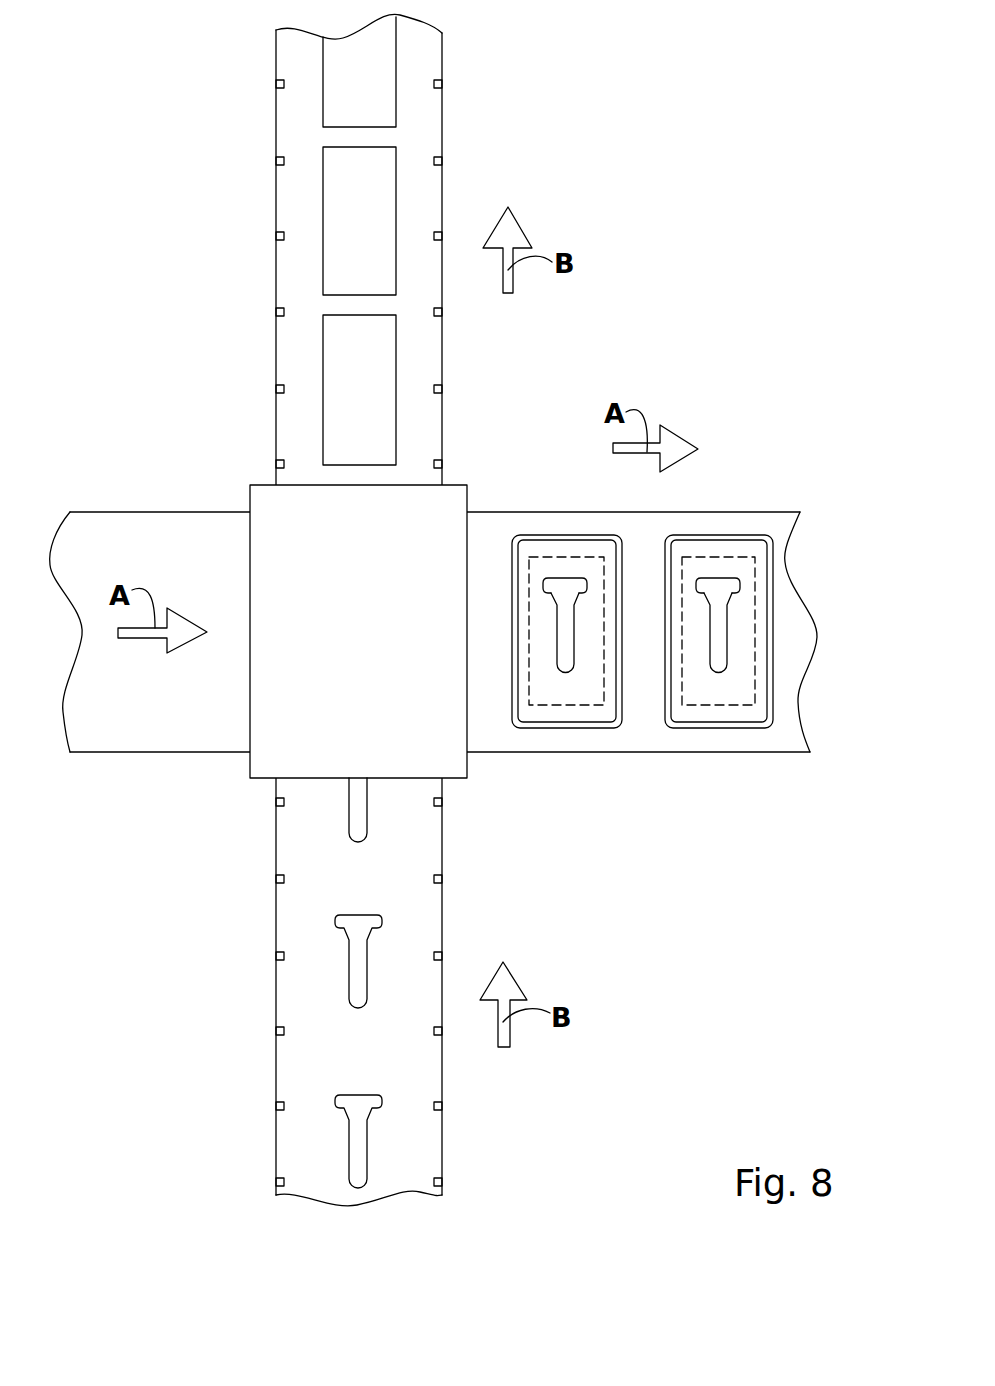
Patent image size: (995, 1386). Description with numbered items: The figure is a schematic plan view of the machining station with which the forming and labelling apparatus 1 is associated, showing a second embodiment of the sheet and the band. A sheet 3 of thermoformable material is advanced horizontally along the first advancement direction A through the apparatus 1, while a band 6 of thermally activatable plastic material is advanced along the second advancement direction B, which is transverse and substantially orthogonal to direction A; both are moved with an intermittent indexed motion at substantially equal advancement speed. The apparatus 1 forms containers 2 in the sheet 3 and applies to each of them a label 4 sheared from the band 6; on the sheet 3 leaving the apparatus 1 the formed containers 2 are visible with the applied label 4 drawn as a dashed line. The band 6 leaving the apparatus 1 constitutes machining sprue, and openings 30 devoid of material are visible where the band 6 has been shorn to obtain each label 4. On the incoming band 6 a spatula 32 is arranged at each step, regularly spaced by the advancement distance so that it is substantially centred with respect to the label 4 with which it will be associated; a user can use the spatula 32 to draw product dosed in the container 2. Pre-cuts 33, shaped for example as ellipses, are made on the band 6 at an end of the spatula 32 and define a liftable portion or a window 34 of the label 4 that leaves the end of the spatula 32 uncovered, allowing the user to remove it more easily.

The forming and labelling apparatus 1 is at (366, 637).
The object 2 is at (571, 529).
The sheet 3 is at (118, 513).
The label 4 is at (540, 622).
The band 6 is at (293, 269).
The opening 30 is at (325, 220).
The spatula 32 is at (568, 652).
The pre-cut 33 is at (415, 914).
The window 34 is at (585, 585).